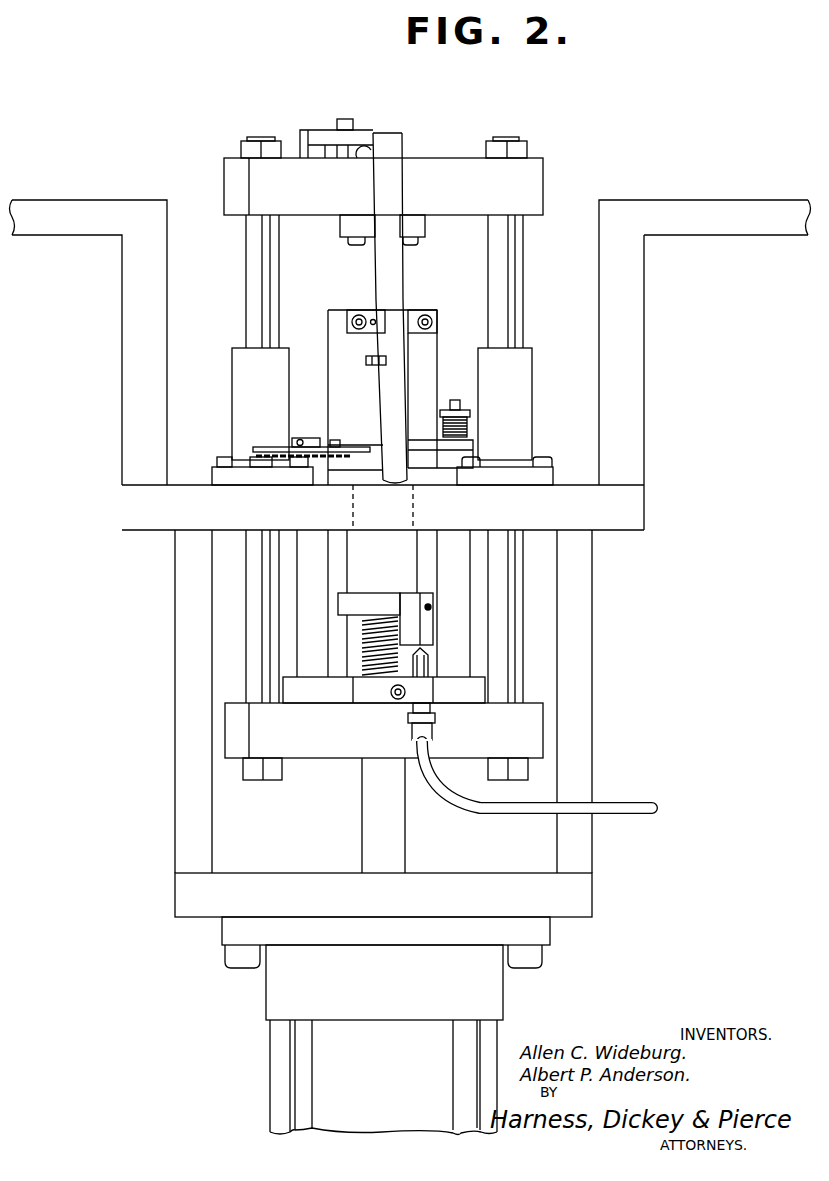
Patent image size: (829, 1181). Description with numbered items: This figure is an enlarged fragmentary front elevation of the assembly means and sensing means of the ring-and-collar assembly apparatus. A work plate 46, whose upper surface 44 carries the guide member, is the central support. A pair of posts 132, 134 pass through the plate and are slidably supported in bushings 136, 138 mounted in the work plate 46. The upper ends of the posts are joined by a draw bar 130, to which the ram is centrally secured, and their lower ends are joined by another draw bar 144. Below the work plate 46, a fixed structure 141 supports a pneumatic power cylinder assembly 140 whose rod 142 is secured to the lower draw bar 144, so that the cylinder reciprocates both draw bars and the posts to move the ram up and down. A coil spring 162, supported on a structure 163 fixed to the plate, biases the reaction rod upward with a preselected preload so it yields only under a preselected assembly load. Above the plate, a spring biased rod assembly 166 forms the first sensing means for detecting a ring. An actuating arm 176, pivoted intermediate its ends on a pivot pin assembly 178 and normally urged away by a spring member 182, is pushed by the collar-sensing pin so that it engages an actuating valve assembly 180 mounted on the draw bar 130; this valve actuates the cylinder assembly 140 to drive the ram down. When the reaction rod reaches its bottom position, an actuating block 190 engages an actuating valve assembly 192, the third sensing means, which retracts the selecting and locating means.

The surface 44 is at (185, 480).
The work plate 46 is at (155, 505).
The draw bar 130 is at (423, 165).
The post 132 is at (247, 262).
The post 134 is at (507, 270).
The bushing 136 is at (232, 412).
The bushing 138 is at (515, 390).
The pneumatic power cylinder assembly 140 is at (490, 1046).
The fixed structure 141 is at (205, 895).
The rod 142 is at (395, 837).
The draw bar 144 is at (322, 752).
The coil spring 162 is at (360, 650).
The structure 163 is at (300, 618).
The spring biased rod assembly 166 is at (312, 426).
The actuating arm 176 is at (393, 266).
The pivot pin assembly 178 is at (410, 312).
The actuating valve assembly 180 is at (316, 143).
The spring member 182 is at (370, 364).
The actuating block 190 is at (428, 627).
The actuating valve assembly 192 is at (430, 672).